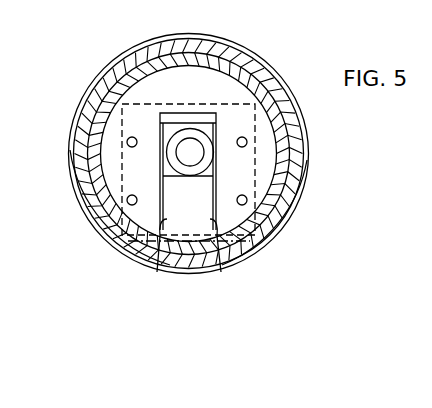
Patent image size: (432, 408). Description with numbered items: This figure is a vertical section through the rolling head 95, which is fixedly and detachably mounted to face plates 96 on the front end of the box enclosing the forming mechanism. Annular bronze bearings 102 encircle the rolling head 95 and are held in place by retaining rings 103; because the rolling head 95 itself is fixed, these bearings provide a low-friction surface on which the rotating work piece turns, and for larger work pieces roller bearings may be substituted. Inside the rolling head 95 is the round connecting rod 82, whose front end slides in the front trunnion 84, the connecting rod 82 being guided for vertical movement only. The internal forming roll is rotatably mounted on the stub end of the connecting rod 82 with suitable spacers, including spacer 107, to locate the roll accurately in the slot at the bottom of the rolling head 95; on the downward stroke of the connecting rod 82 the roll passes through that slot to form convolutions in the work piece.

The annular bronze bearing 102 is at (231, 43).
The retaining ring 103 is at (275, 73).
The rolling head 95 is at (286, 172).
The spacer 107 is at (196, 130).
The connecting rod 82 is at (190, 160).
The front trunnion 84 is at (206, 178).
The face plate 96 is at (157, 263).